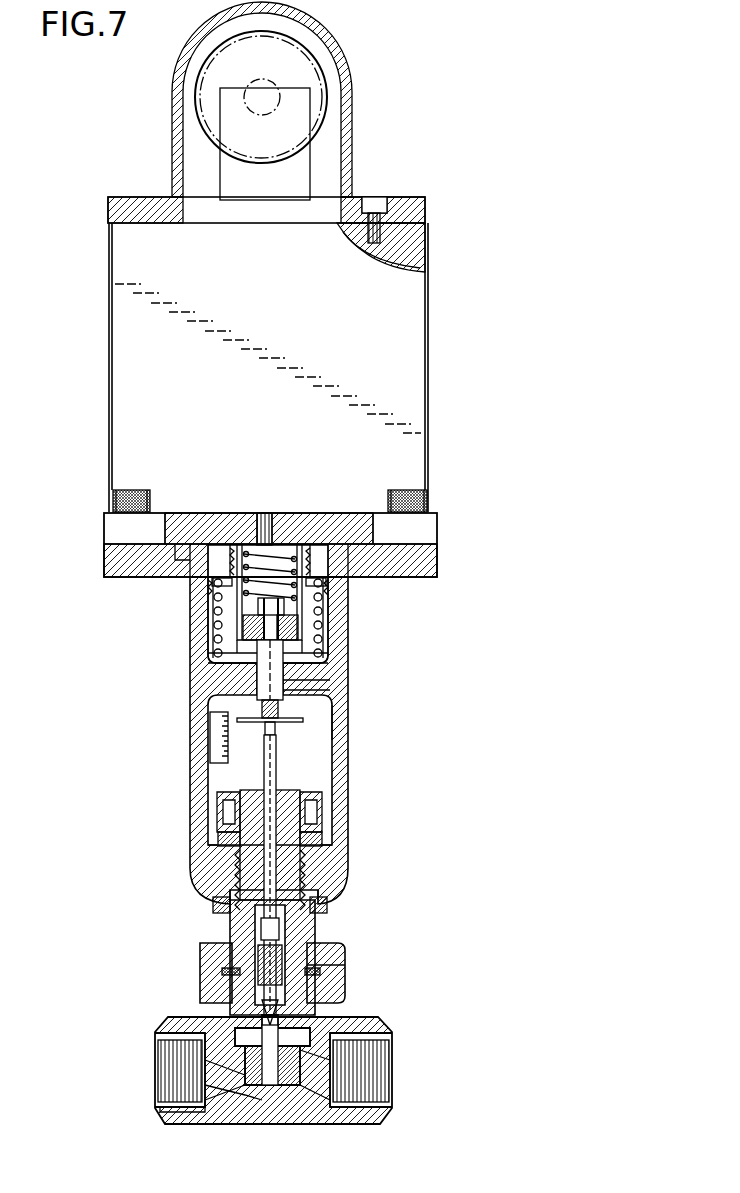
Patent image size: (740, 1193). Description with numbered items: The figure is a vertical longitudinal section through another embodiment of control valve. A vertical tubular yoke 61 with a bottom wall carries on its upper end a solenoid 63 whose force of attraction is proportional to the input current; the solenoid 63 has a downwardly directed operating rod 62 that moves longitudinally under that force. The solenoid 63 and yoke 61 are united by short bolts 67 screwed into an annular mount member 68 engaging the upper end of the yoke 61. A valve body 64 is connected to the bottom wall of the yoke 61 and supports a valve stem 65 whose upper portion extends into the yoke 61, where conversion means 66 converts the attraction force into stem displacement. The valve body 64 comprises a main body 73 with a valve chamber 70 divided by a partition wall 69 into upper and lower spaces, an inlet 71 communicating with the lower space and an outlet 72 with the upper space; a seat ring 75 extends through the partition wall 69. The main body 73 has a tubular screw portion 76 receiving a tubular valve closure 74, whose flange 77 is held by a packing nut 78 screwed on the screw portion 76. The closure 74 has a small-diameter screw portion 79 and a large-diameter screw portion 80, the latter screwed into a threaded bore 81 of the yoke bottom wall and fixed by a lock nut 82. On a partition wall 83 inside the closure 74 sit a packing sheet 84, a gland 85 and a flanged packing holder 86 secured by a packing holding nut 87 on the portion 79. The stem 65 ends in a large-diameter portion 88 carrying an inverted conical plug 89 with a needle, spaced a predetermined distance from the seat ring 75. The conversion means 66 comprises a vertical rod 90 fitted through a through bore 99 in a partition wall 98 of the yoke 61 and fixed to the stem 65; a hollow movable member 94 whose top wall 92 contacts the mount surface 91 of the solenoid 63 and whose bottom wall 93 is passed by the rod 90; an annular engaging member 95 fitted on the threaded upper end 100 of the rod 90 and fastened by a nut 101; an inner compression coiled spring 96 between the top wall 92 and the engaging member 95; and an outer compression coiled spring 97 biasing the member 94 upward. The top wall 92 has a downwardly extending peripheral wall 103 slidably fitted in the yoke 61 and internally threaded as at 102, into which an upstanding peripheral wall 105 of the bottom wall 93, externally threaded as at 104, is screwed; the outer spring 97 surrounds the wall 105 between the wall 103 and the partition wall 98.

The vertical tubular yoke 61 is at (350, 736).
The operating rod 62 is at (265, 514).
The solenoid 63 is at (405, 362).
The valve body 64 is at (150, 1020).
The valve stem 65 is at (268, 772).
The conversion means 66 is at (212, 620).
The short bolts 67 is at (428, 500).
The annular mount member 68 is at (430, 556).
The partition wall 69 is at (208, 1110).
The valve chamber 70 is at (238, 1032).
The inlet 71 is at (160, 1042).
The outlet 72 is at (386, 1042).
The main body 73 is at (166, 1111).
The valve closure 74 is at (318, 928).
The seat ring 75 is at (247, 1080).
The tubular screw portion 76 is at (346, 990).
The flange 77 is at (346, 966).
The packing nut 78 is at (346, 953).
The small-diameter screw portion 79 is at (216, 838).
The large-diameter screw portion 80 is at (228, 868).
The threaded bore 81 is at (214, 892).
The lock nut 82 is at (214, 912).
The partition wall 83 is at (330, 890).
The packing sheet 84 is at (312, 882).
The gland 85 is at (310, 846).
The flanged packing holder 86 is at (300, 782).
The packing holding nut 87 is at (322, 818).
The large-diameter portion 88 is at (262, 938).
The inverted conical plug 89 is at (258, 985).
The vertical rod 90 is at (238, 660).
The mount surface 91 is at (326, 516).
The top wall 92 is at (240, 545).
The bottom wall 93 is at (232, 655).
The hollow movable member 94 is at (198, 640).
The engaging member 95 is at (330, 636).
The inner compression coiled spring 96 is at (299, 545).
The outer compression coiled spring 97 is at (196, 608).
The partition wall 98 is at (336, 716).
The through bore 99 is at (258, 688).
The threaded upper end 100 is at (336, 684).
The nut 101 is at (330, 616).
The internal thread 102 is at (224, 518).
The downwardly extending peripheral wall 103 is at (182, 516).
The external thread 104 is at (340, 584).
The upstanding peripheral wall 105 is at (330, 604).